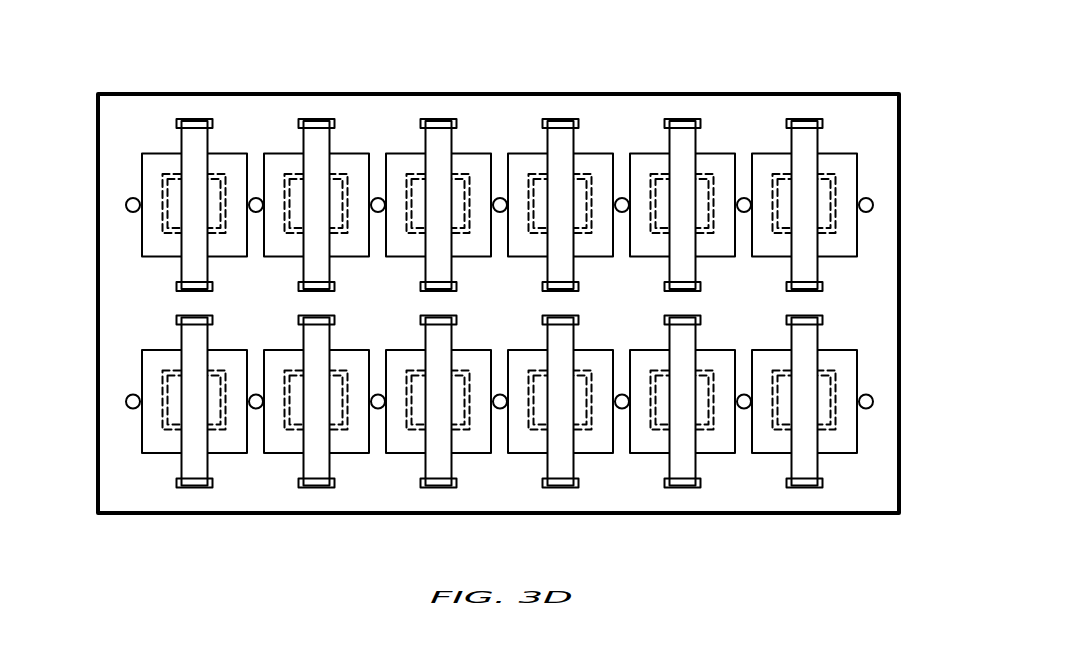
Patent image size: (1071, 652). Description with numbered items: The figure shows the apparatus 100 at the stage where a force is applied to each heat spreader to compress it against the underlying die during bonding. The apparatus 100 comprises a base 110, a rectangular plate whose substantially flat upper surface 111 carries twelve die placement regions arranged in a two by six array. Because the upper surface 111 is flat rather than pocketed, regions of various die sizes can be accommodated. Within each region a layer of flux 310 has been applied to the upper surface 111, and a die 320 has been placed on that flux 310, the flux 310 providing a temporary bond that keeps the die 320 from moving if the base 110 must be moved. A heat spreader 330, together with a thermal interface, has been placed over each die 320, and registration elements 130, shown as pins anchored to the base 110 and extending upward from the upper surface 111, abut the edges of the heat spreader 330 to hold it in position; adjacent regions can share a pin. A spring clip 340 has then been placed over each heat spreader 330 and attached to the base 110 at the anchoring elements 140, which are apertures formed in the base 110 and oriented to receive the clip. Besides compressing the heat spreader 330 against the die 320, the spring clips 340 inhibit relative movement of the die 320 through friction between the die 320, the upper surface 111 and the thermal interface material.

The apparatus 100 is at (90, 87).
The base 110 is at (857, 90).
The upper surface 111 is at (862, 496).
The registration elements 130 is at (254, 409).
The anchoring elements 140 is at (700, 287).
The flux 310 is at (342, 183).
The die 320 is at (212, 190).
The heat spreader 330 is at (598, 152).
The spring clip 340 is at (552, 143).